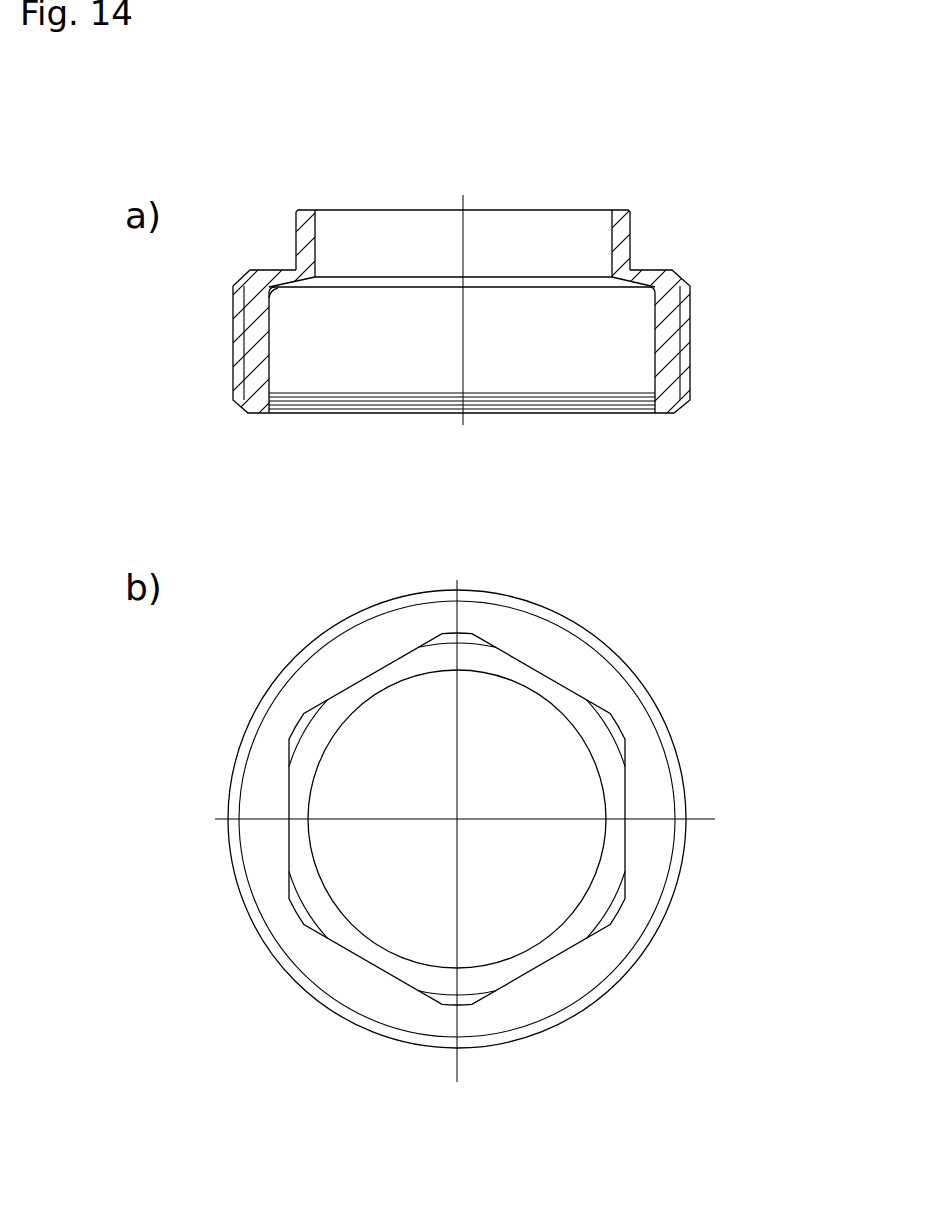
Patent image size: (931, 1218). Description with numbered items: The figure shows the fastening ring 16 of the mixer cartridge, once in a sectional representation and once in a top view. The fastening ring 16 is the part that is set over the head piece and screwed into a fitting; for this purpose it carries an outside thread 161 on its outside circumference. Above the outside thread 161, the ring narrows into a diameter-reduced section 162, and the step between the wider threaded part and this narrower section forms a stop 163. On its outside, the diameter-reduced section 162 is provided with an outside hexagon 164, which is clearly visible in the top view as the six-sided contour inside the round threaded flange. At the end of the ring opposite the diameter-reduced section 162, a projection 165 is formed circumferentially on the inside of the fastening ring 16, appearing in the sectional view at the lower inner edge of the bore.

The fastening ring 16 is at (620, 149).
The outside thread 161 is at (692, 330).
The diameter-reduced section 162 is at (632, 233).
The stop 163 is at (291, 292).
The outside hexagon 164 is at (543, 672).
The projection 165 is at (282, 414).